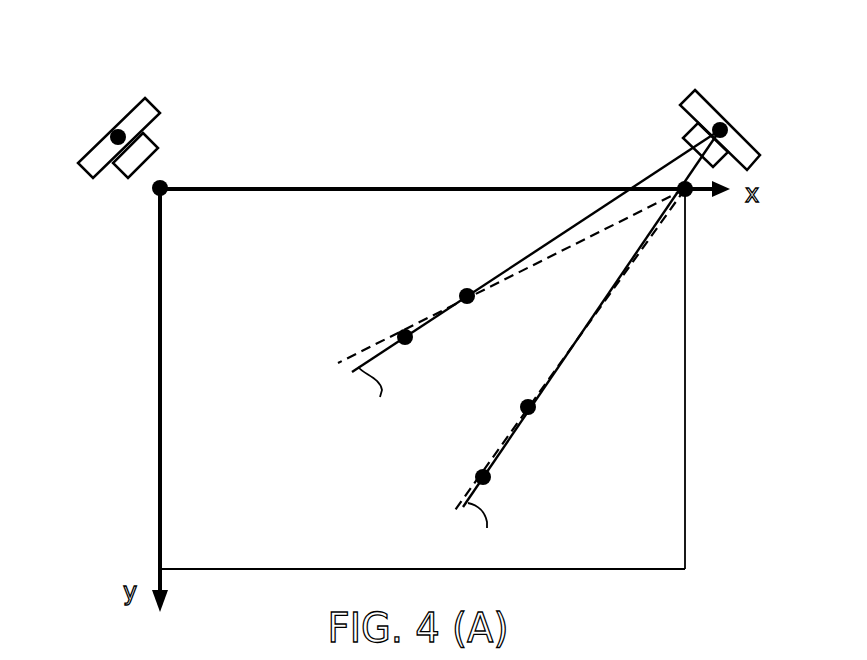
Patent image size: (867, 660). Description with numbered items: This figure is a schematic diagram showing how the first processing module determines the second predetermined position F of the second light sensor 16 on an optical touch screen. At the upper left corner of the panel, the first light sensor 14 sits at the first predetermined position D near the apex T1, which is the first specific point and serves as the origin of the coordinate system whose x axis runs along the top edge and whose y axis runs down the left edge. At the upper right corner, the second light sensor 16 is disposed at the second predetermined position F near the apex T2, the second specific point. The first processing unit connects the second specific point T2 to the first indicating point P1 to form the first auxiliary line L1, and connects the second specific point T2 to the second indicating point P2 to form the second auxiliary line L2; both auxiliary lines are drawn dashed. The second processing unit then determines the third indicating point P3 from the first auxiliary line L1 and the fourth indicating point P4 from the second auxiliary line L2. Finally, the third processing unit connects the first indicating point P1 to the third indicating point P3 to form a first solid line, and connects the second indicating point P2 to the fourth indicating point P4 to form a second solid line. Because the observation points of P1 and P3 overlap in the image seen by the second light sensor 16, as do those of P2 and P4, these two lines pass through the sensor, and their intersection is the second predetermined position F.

The first light sensor 14 is at (147, 98).
The second light sensor 16 is at (719, 104).
The first predetermined position D is at (115, 133).
The second predetermined position F is at (721, 122).
The first specific point T1 is at (205, 172).
The second specific point T2 is at (688, 197).
The first indicating point P1 is at (467, 278).
The second indicating point P2 is at (546, 417).
The third indicating point P3 is at (415, 353).
The fourth indicating point P4 is at (502, 479).
The first auxiliary line L1 is at (370, 347).
The second auxiliary line L2 is at (465, 495).